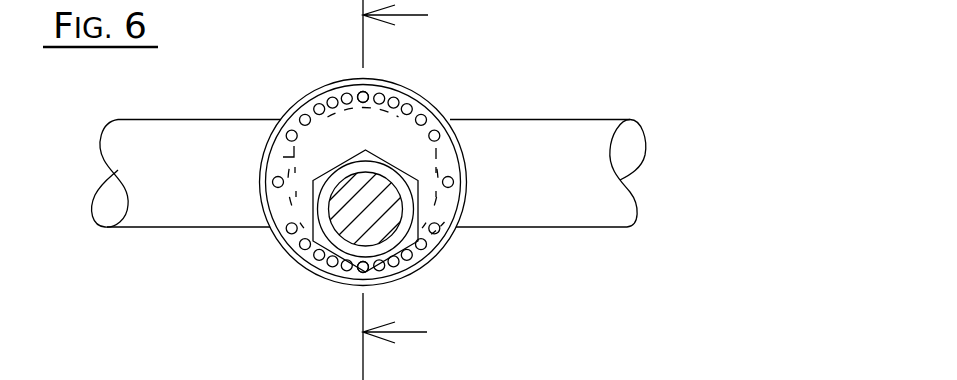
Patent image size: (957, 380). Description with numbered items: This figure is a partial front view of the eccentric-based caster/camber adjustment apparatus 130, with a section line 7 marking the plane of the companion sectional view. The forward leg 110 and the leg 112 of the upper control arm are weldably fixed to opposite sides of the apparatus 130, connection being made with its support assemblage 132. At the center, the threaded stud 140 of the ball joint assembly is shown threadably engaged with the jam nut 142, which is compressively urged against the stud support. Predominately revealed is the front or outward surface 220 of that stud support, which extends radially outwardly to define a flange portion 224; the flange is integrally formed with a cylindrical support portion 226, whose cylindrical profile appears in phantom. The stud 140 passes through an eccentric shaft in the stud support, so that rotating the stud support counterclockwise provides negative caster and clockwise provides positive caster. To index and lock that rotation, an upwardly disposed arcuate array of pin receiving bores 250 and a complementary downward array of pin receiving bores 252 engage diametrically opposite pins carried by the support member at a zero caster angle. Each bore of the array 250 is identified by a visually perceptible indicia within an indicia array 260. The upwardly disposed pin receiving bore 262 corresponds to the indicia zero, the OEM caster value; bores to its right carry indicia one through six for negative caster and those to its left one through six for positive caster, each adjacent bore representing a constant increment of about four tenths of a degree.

The section line 7- 7 is at (380, 190).
The forward leg 110 is at (552, 130).
The leg 112 is at (244, 130).
The caster/camber adjustment apparatus 130 is at (459, 52).
The support assemblage 132 is at (498, 292).
The threaded stud 140 is at (341, 240).
The jam nut 142 is at (312, 227).
The front surface 220 is at (440, 160).
The flange portion 224 is at (440, 224).
The cylindrical support portion 226 is at (283, 157).
The upward array of pin receiving bores 250 is at (417, 100).
The downward array of pin receiving bores 252 is at (406, 285).
The indicia array 260 is at (286, 198).
The upwardly disposed pin receiving bore 262 is at (366, 96).